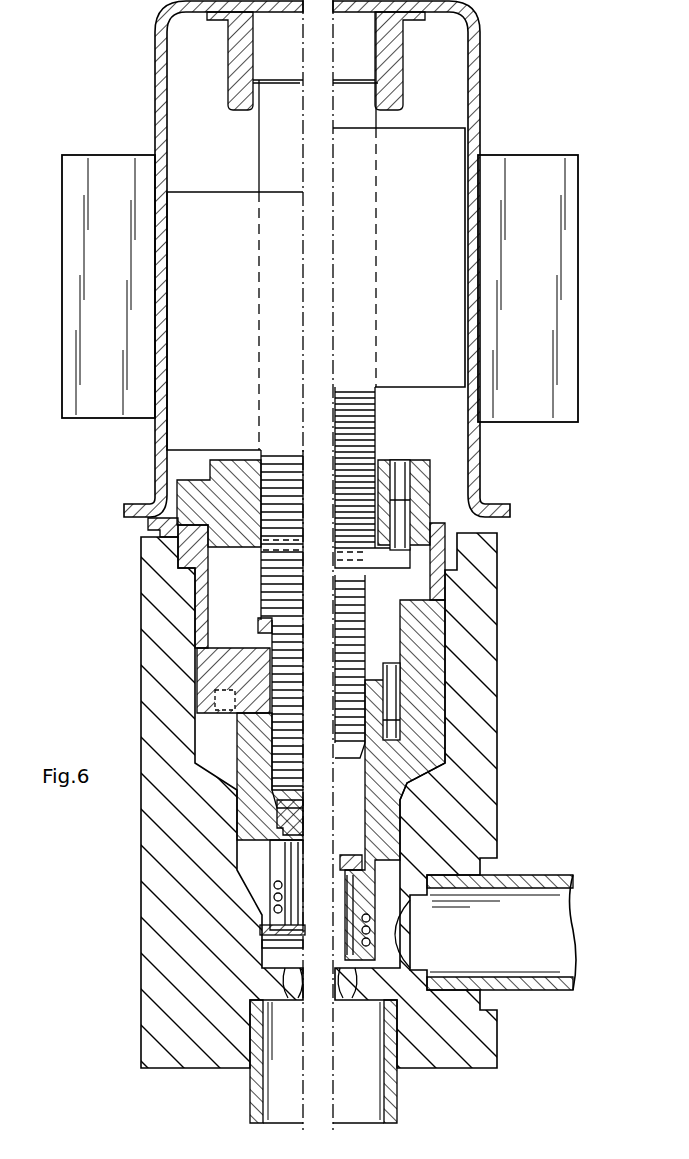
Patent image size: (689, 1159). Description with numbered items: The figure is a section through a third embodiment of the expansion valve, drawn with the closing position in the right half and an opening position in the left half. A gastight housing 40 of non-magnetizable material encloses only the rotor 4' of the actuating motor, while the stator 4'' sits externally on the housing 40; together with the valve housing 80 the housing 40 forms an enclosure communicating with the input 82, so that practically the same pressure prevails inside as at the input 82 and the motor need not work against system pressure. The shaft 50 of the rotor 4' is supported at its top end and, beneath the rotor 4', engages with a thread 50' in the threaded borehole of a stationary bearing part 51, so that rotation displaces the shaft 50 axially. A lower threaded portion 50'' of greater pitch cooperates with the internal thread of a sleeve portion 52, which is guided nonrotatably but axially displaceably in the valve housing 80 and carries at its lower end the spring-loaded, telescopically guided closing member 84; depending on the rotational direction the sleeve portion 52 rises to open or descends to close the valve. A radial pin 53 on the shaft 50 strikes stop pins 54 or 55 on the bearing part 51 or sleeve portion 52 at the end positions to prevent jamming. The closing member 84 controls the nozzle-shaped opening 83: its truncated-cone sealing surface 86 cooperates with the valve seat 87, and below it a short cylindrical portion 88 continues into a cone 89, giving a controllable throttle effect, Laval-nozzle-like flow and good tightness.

The housing 40 is at (476, 38).
The shaft 50 is at (316, 102).
The rotor 4' is at (345, 281).
The stator 4'' is at (339, 288).
The thread 50' is at (345, 503).
The bearing part 51 is at (182, 492).
The stop pin 54 is at (405, 505).
The pin 53 is at (440, 575).
The threaded portion 50'' is at (341, 767).
The sleeve portion 52 is at (215, 682).
The stop pin 55 is at (400, 672).
The valve housing 80 is at (482, 812).
The closing member 84 is at (345, 855).
The input 82 is at (553, 930).
The sealing surface 86 is at (275, 935).
The cylindrical portion 88 is at (300, 944).
The cone 89 is at (290, 1000).
The valve seat 87 is at (350, 1000).
The nozzle-shaped opening 83 is at (275, 1085).